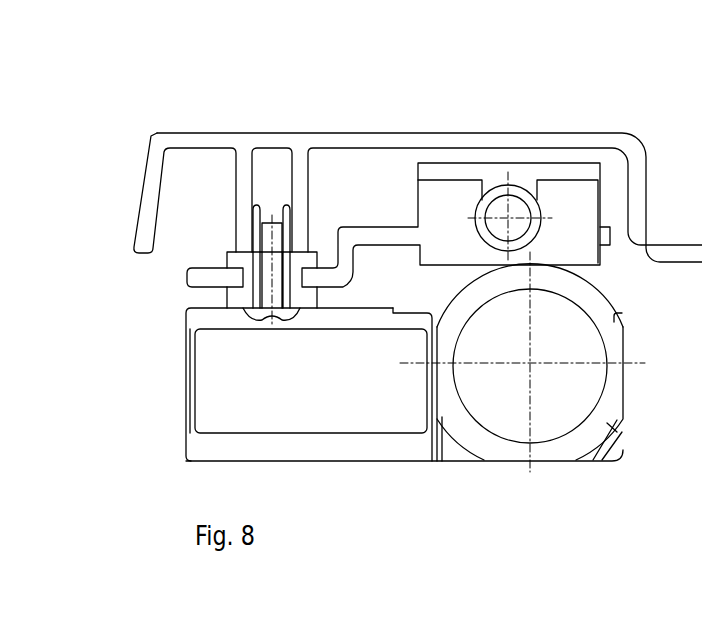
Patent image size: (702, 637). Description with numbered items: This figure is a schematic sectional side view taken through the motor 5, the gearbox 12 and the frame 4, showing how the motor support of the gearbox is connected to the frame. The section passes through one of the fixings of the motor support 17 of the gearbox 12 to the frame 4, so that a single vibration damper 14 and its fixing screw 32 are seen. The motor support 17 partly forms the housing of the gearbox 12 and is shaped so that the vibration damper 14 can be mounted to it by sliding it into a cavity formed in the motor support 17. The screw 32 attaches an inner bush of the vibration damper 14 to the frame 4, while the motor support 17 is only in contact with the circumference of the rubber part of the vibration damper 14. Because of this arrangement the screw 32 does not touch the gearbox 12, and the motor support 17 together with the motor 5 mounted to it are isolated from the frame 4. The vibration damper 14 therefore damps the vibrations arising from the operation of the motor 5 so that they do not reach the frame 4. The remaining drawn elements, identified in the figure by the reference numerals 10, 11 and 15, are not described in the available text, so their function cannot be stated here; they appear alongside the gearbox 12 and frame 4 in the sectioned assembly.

The frame 4 is at (635, 152).
The motor 5 is at (287, 388).
The bearing ring 10 is at (531, 366).
The bearing housing 11 is at (474, 423).
The gearbox 12 is at (416, 196).
The vibration damper 14 is at (240, 261).
The pivot bushing 15 is at (521, 197).
The motor support 17 is at (570, 233).
The screw 32 is at (290, 272).